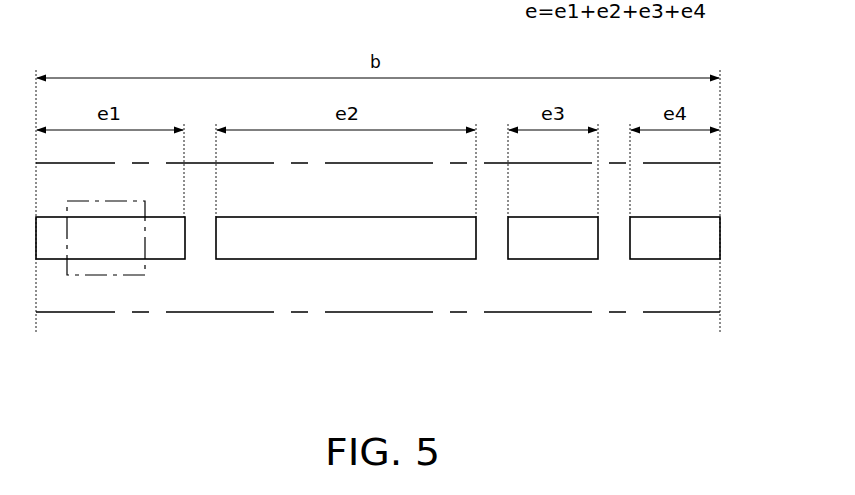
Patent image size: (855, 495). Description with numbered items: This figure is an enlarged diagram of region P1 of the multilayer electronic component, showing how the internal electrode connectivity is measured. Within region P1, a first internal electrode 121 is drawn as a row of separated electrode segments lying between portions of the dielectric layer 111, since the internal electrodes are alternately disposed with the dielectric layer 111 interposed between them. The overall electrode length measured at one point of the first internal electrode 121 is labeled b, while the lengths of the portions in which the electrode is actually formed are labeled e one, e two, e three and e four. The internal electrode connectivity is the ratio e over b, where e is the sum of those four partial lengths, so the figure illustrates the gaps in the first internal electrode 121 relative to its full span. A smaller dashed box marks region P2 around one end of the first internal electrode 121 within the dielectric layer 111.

The first internal electrode 121 is at (697, 238).
The dielectric layer 111 is at (697, 288).
The region P1 is at (411, 279).
The region P2 is at (104, 276).